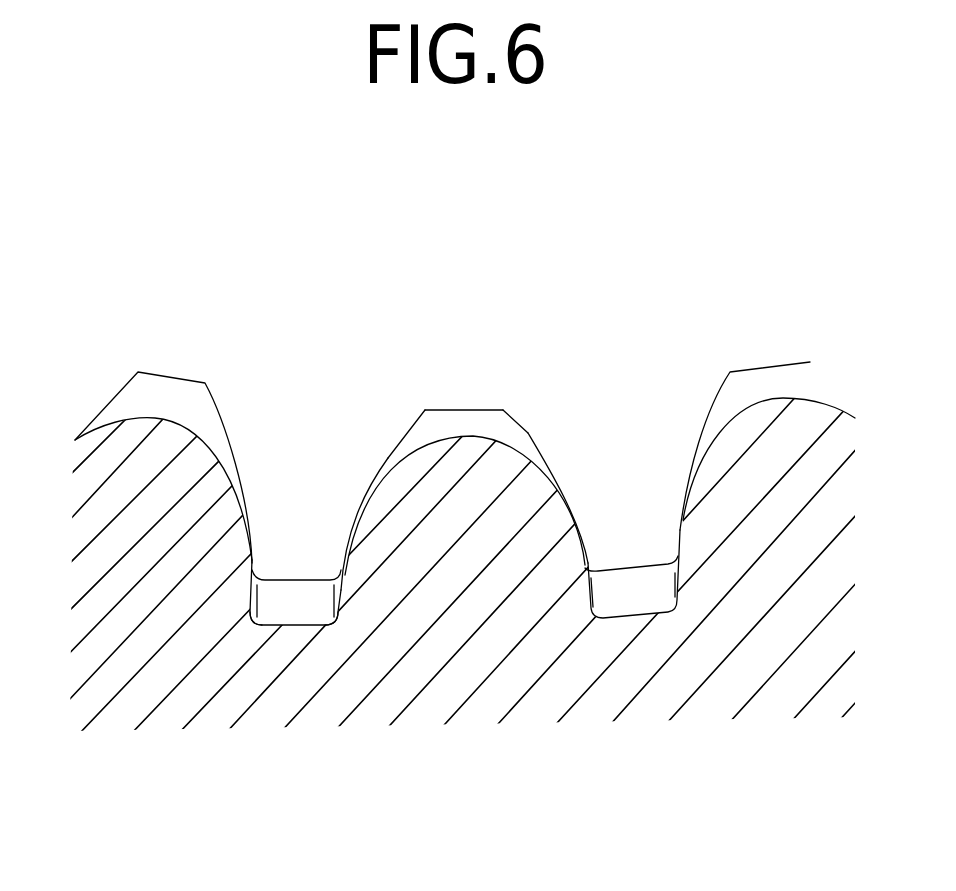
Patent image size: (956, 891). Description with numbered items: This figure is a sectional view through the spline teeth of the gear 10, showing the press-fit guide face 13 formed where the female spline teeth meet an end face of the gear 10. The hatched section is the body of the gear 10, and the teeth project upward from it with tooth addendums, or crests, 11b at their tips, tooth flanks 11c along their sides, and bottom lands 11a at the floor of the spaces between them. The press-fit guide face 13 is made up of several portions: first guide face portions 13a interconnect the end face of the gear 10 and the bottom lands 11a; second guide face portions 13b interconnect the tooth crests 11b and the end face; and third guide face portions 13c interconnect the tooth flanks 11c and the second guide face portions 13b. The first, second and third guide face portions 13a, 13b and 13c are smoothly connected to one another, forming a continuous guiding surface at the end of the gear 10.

The gear 10 is at (333, 687).
The bottom lands 11a is at (635, 570).
The tooth addendums 11b is at (468, 407).
The tooth flanks 11c is at (387, 454).
The press-fit guide face 13 is at (298, 565).
The first guide face portions 13a is at (285, 603).
The second guide face portions 13b is at (423, 443).
The third guide face portions 13c is at (247, 585).